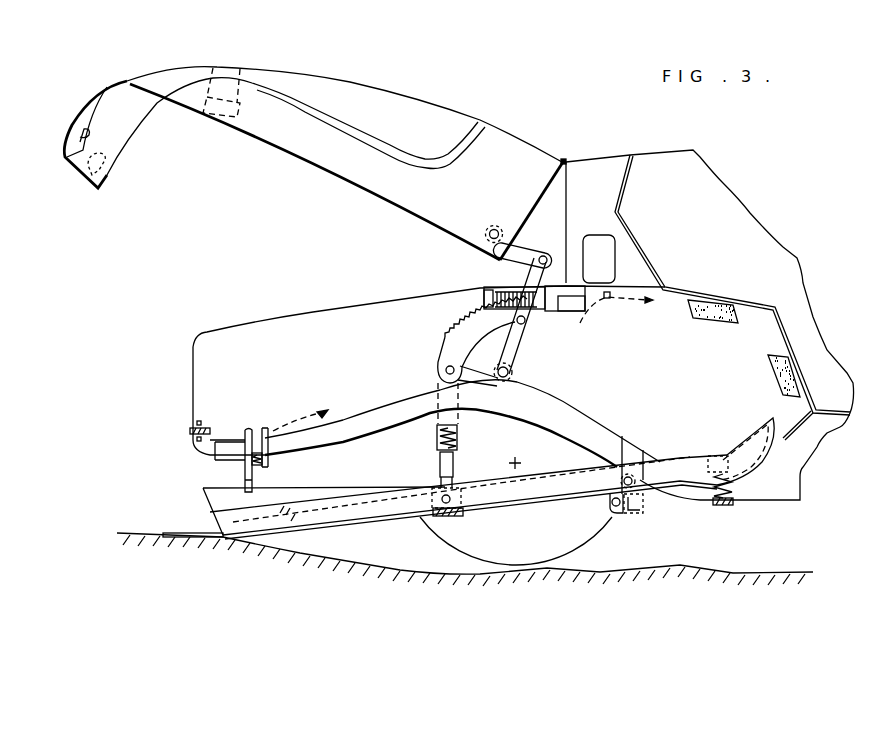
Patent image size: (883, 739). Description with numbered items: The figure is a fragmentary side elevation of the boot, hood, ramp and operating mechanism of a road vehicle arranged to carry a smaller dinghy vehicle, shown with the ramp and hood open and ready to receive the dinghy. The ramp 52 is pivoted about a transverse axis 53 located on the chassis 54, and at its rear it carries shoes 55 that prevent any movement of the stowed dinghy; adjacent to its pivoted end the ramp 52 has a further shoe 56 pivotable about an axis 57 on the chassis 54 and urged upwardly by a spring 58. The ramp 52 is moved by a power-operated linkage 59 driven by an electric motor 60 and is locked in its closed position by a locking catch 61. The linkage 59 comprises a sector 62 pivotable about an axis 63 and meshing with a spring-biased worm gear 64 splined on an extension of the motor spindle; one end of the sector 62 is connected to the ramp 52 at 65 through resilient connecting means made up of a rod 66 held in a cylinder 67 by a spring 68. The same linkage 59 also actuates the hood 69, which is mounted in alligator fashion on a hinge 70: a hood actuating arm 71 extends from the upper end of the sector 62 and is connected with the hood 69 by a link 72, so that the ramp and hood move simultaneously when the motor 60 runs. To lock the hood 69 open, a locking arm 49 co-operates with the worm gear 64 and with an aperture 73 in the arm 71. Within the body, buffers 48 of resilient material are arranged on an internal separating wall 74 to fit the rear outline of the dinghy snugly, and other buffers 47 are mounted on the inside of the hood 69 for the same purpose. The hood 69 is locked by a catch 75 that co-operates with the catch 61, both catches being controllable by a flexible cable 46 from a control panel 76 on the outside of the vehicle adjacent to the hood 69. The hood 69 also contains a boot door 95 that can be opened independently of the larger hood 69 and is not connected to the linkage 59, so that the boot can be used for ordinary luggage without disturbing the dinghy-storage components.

The flexible cable 46 is at (280, 430).
The buffers 47 is at (208, 115).
The buffers 48 is at (707, 312).
The locking arm 49 is at (513, 290).
The ramp 52 is at (508, 495).
The transverse axis 53 is at (614, 507).
The chassis 54 is at (600, 442).
The shoes 55 is at (200, 488).
The shoe 56 is at (748, 457).
The axis 57 is at (643, 487).
The spring 58 is at (728, 478).
The power-operated linkage 59 is at (522, 347).
The electric motor 60 is at (573, 300).
The locking catch 61 is at (255, 478).
The sector 62 is at (460, 325).
The axis 63 is at (508, 368).
The spring-biased worm gear 64 is at (484, 288).
The connection point 65 is at (440, 503).
The rod 66 is at (452, 467).
The cylinder 67 is at (460, 423).
The spring 68 is at (438, 440).
The hood 69 is at (500, 140).
The hinge 70 is at (565, 162).
The hood actuating arm 71 is at (537, 277).
The link 72 is at (517, 242).
The aperture 73 is at (547, 290).
The internal separating wall 74 is at (627, 178).
The catch 75 is at (188, 430).
The control panel 76 is at (607, 260).
The boot door 95 is at (402, 100).